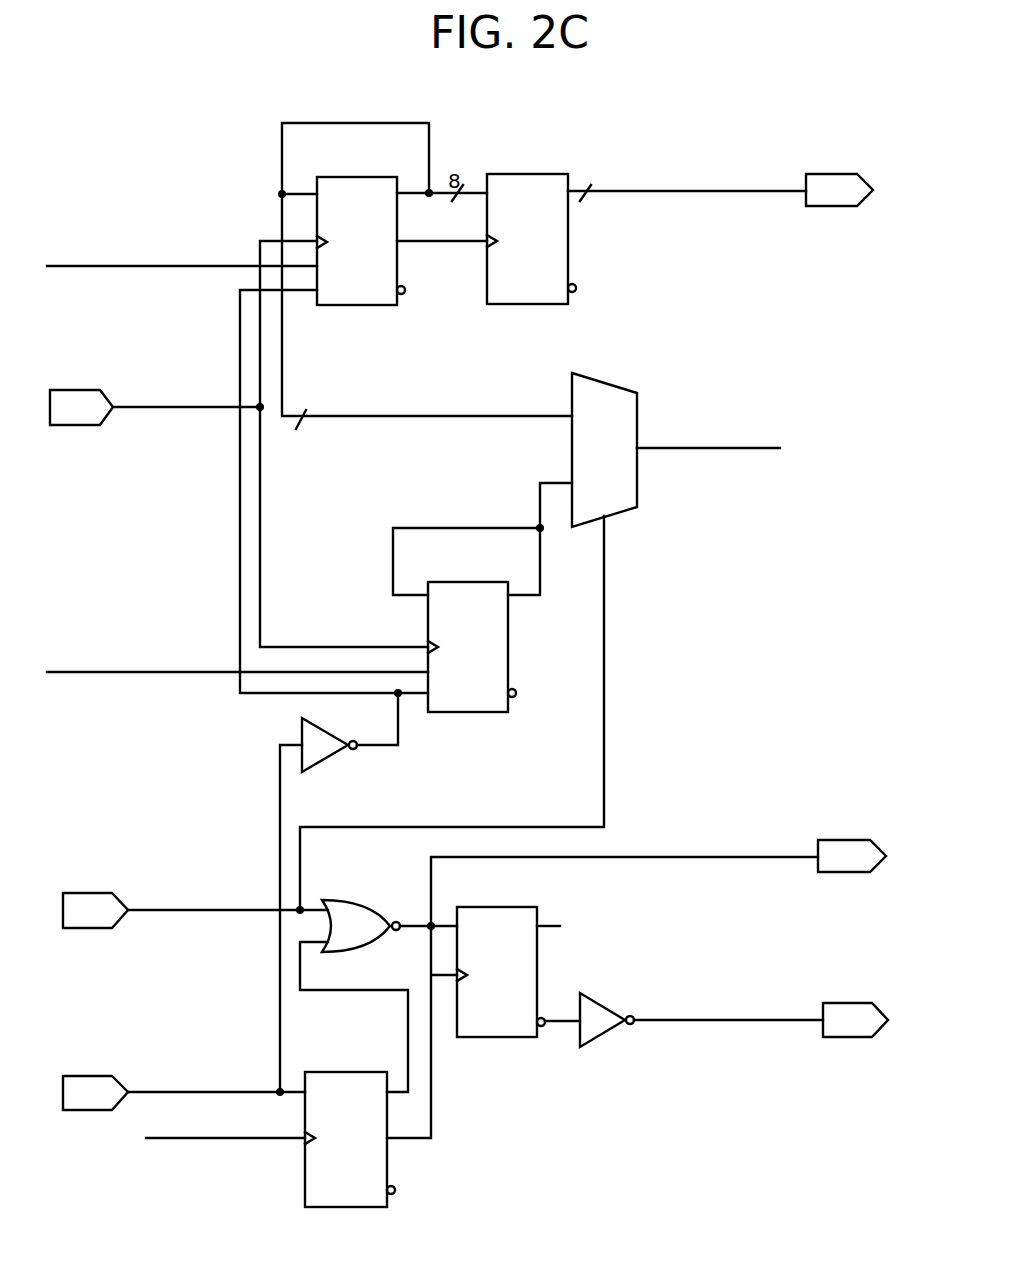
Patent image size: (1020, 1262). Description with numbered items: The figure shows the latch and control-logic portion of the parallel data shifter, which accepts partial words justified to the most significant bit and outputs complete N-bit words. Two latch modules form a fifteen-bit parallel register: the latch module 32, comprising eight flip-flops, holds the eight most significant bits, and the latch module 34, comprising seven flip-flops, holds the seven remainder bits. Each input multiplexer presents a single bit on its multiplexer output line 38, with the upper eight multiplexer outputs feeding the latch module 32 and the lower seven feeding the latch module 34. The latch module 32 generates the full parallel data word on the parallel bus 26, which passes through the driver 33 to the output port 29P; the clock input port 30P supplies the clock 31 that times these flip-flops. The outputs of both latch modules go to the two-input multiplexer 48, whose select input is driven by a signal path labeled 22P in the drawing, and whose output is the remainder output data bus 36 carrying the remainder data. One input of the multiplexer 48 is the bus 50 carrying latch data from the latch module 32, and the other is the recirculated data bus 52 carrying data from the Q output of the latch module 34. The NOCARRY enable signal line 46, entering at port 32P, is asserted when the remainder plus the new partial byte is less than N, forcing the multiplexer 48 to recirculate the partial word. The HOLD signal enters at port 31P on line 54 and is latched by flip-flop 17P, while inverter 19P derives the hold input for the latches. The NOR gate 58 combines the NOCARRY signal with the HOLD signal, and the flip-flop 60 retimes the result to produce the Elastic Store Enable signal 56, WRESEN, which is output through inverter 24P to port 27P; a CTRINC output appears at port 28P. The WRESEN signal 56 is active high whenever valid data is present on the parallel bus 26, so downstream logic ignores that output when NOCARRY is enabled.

The bus 50 is at (282, 154).
The parallel bus 26 is at (720, 201).
The multiplexer output line 38 is at (163, 270).
The latch module 32 is at (365, 307).
The driver 33 is at (524, 306).
The clock 31 is at (239, 713).
The two-input multiplexer 48 is at (637, 402).
The remainder output data bus 36 is at (755, 450).
The recirculated data bus 52 is at (405, 525).
The latch module 34 is at (482, 713).
The NOR gate 58 is at (380, 905).
The NOCARRY enable signal line 46 is at (195, 918).
The HOLD input signal 54 is at (184, 1073).
The Elastic Store Enable signal 56 is at (716, 1033).
The flip-flop 60 is at (490, 1040).
The MSB line 22P is at (427, 322).
The inverter 19P is at (368, 892).
The inverter 24P is at (623, 1033).
The flip-flop 17P FDI 17P is at (350, 1126).
The WRESEN output port 27P is at (855, 1020).
The CTRINC output port 28P is at (636, 984).
The PDO output port 29P is at (786, 196).
The CLK input port 30P is at (81, 407).
The HOLD input port 31P is at (95, 1093).
The NOCARY input port 32P is at (95, 910).